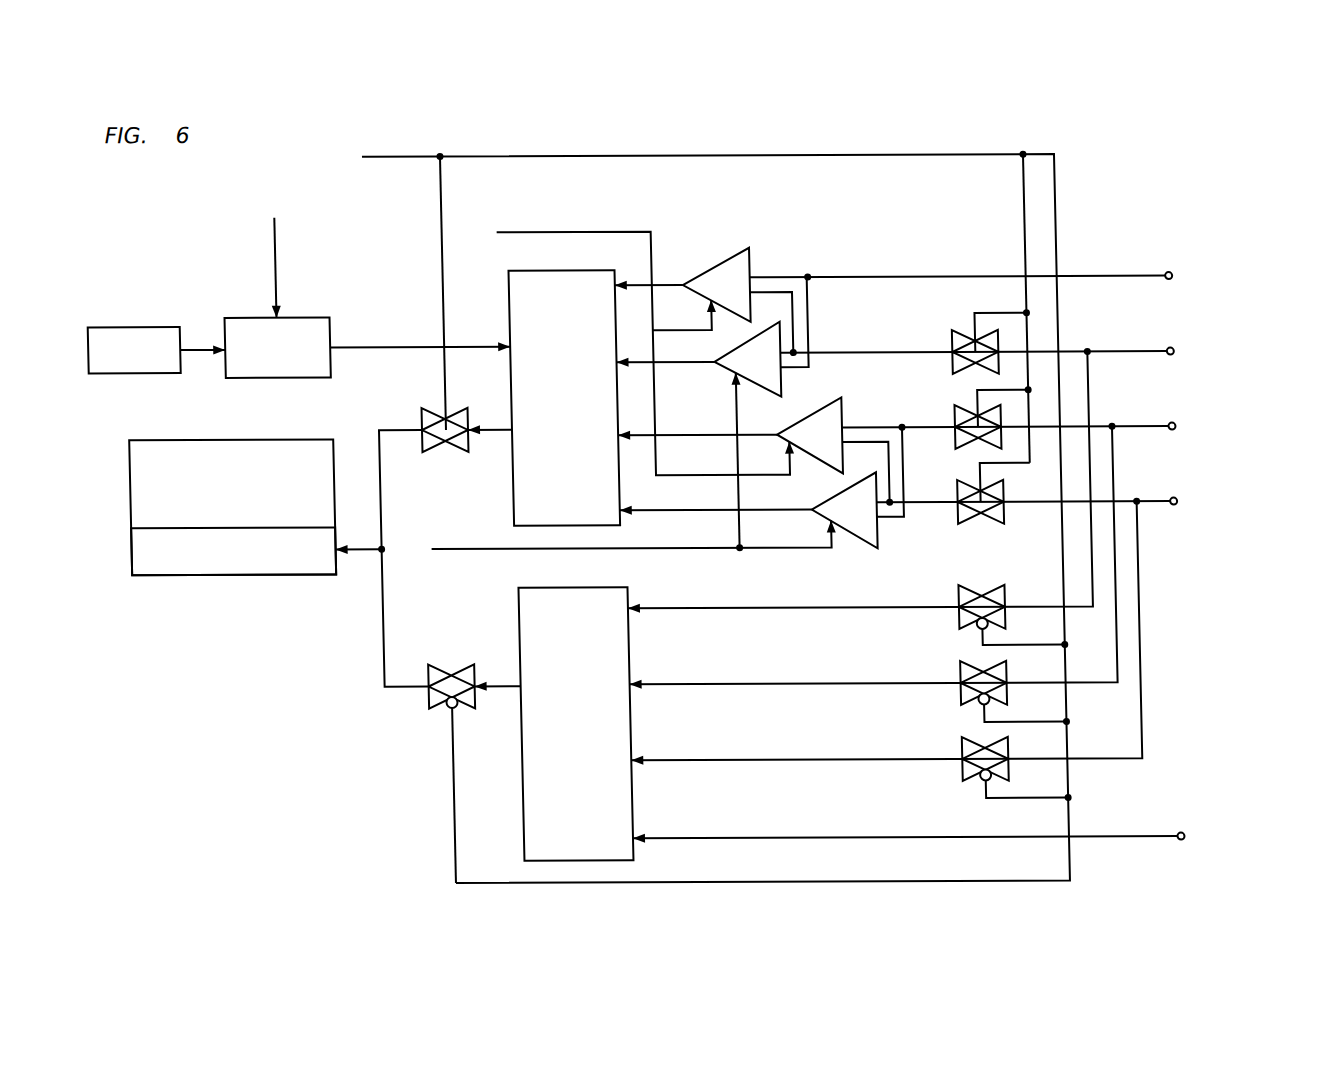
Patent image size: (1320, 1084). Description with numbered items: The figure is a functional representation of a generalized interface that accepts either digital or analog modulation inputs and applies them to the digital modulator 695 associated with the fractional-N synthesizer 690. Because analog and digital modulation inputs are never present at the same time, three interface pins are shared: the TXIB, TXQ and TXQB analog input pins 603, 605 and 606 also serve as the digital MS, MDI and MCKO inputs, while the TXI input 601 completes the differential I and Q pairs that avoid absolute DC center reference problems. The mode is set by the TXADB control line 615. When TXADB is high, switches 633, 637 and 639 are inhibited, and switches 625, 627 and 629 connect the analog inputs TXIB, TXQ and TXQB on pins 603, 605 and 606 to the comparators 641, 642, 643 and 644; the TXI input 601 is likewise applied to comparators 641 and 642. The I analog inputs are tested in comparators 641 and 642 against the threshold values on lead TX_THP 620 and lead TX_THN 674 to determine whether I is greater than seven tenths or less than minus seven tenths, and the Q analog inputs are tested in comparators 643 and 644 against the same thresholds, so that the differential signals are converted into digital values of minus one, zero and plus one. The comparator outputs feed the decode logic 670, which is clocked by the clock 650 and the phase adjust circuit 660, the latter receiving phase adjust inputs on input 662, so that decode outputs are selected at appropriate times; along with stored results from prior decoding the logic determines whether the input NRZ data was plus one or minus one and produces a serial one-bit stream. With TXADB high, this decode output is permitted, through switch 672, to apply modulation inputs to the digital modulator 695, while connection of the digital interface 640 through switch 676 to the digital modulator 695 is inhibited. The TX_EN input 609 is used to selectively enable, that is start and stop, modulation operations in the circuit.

The TXI input 601 is at (1133, 278).
The TXIB analog input pin 603 is at (1133, 353).
The TXQ analog input pin 605 is at (1142, 428).
The TXQB analog input pin 606 is at (1153, 503).
The TX_EN input 609 is at (1140, 838).
The TXADB control line 615 is at (613, 154).
The TX_THP threshold line 620 is at (549, 236).
The switch 625 is at (954, 331).
The switch 627 is at (956, 408).
The switch 629 is at (958, 523).
The switch 633 is at (956, 587).
The switch 637 is at (955, 662).
The switch 639 is at (957, 738).
The digital interface 640 is at (594, 587).
The comparator 641 is at (719, 258).
The comparator 642 is at (726, 372).
The comparator 643 is at (787, 424).
The comparator 644 is at (818, 498).
The clock 650 is at (149, 324).
The phase adjust circuit 660 is at (307, 316).
The phase adjust input 662 is at (284, 252).
The decode logic 670 is at (586, 268).
The switch 672 is at (420, 406).
The TX_THN threshold line 674 is at (454, 552).
The switch 676 is at (426, 663).
The F-N synthesizer 690 is at (294, 438).
The digital modulator 695 is at (292, 573).